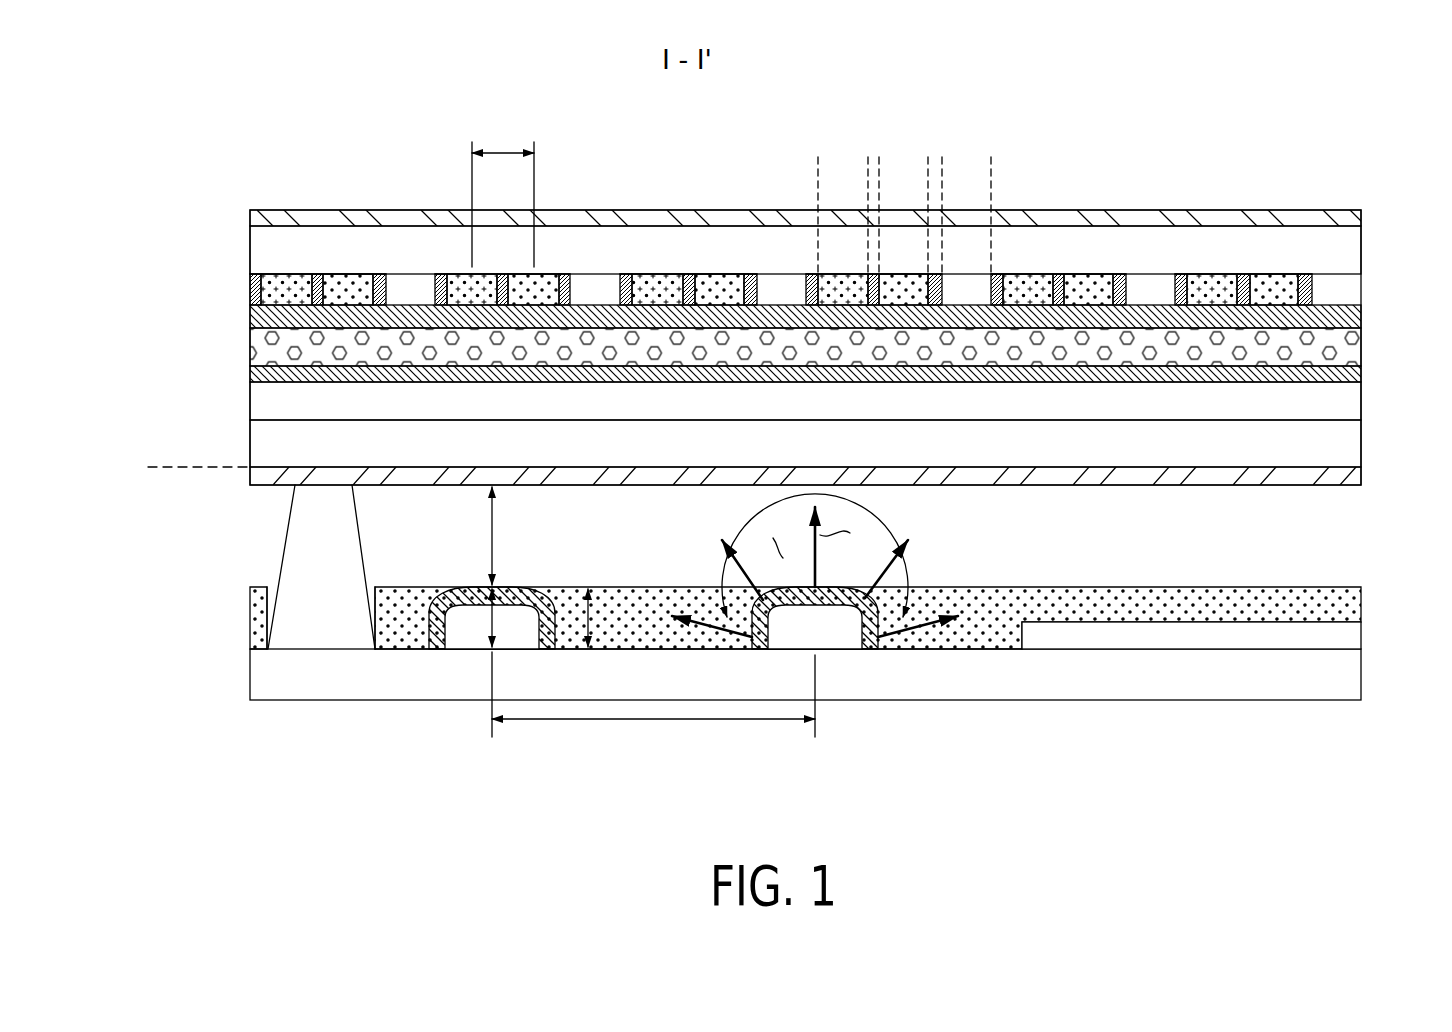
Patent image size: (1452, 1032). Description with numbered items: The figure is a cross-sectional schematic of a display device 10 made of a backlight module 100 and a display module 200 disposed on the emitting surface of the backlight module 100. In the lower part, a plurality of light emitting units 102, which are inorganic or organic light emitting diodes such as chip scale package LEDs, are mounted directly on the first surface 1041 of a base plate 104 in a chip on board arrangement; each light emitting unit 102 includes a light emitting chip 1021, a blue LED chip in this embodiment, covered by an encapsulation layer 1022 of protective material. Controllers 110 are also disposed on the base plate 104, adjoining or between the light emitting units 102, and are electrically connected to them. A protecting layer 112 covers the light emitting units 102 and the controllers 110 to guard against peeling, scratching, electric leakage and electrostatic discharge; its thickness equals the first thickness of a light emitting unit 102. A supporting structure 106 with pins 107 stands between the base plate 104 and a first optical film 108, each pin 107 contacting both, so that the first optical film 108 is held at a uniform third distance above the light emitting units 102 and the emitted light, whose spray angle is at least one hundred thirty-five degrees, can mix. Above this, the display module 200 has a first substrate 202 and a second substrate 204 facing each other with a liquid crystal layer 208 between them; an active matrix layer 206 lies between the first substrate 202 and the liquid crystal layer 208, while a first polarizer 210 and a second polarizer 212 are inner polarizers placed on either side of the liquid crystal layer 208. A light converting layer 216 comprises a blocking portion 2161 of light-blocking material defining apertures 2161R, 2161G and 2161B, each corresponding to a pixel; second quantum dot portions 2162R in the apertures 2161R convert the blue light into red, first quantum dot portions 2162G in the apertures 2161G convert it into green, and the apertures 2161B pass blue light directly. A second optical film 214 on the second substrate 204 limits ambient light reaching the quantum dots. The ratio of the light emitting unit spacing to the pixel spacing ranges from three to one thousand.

The display device 10 is at (1326, 134).
The backlight module 100 is at (146, 470).
The display module 200 is at (146, 210).
The light emitting unit 102 is at (962, 750).
The light emitting chip 1021 is at (838, 634).
The encapsulation layer 1022 is at (873, 636).
The base plate 104 is at (1362, 675).
The first surface 1041 is at (393, 651).
The supporting structure 106 is at (321, 567).
The pin 107 is at (292, 569).
The first optical film 108 is at (1362, 478).
The controller 110 is at (1362, 636).
The protecting layer 112 is at (1362, 605).
The first substrate 202 is at (260, 440).
The second substrate 204 is at (260, 250).
The active matrix layer 206 is at (1362, 402).
The liquid crystal layer 208 is at (1362, 350).
The first polarizer 210 is at (260, 374).
The second polarizer 212 is at (260, 316).
The second optical film 214 is at (1362, 218).
The light converting layer 216 is at (1372, 275).
The blocking portion 2161 is at (1183, 287).
The aperture 2161R is at (868, 157).
The aperture 2161G is at (928, 157).
The aperture 2161B is at (942, 157).
The second quantum dot portion 2162R is at (845, 286).
The first quantum dot portion 2162G is at (903, 285).